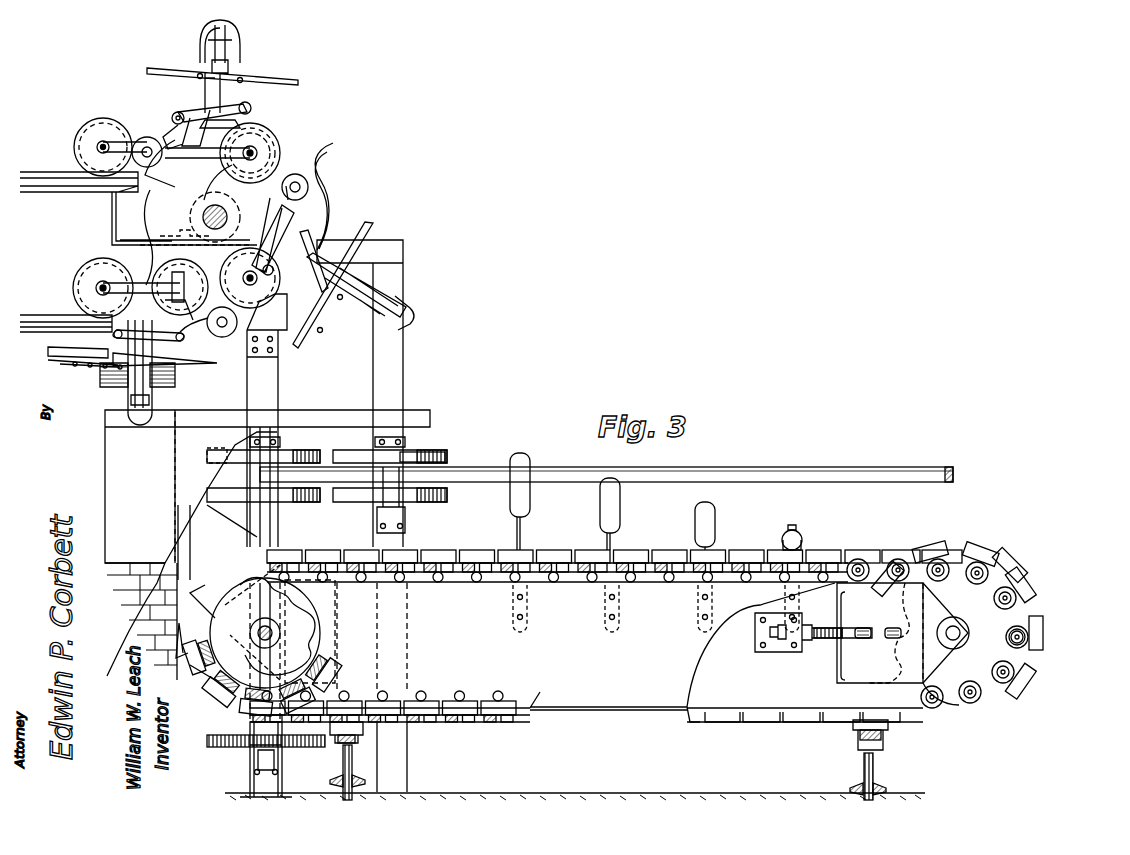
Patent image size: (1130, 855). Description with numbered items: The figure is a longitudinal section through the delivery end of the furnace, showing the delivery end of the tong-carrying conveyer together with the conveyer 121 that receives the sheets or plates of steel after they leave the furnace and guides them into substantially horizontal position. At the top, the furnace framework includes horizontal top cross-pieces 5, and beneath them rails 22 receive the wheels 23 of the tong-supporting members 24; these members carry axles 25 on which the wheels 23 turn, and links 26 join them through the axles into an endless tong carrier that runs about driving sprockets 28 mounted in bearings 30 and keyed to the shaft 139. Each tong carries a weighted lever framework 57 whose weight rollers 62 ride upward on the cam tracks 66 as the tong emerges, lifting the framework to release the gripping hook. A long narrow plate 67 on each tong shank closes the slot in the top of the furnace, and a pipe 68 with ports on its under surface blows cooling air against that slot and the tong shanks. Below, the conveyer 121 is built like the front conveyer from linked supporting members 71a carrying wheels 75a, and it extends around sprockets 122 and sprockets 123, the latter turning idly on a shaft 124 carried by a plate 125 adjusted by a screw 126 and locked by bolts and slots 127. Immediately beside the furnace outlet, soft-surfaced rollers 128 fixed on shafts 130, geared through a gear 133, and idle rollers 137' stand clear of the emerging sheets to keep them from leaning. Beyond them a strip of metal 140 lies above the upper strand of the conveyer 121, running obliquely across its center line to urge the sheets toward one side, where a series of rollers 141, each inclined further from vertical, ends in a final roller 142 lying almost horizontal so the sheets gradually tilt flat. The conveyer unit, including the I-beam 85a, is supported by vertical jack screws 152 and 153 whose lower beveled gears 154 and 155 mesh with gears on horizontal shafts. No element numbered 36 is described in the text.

The top cross-pieces 5 is at (110, 221).
The rails 22 is at (68, 320).
The wheels 23 is at (110, 130).
The tong-supporting members 24 is at (251, 146).
The axles 25 is at (262, 148).
The links 26 is at (280, 152).
The driving sprockets 28 is at (306, 190).
The bearings 30 is at (187, 223).
The table 36 is at (72, 182).
The weighted lever framework 57 is at (197, 114).
The weight rollers 62 is at (223, 340).
The cam tracks 66 is at (314, 166).
The plate 67 is at (266, 78).
The pipe 68 is at (74, 358).
The supporting members 71a is at (921, 554).
The wheels 75a is at (1027, 640).
The I-beam 85a is at (735, 690).
The conveyer 121 is at (1031, 602).
The sprockets 122 is at (230, 637).
The sprockets 123 is at (972, 604).
The shaft 124 is at (960, 636).
The plate 125 is at (866, 600).
The screw 126 is at (820, 655).
The bolts and slots 127 is at (893, 642).
The rollers 128 is at (296, 448).
The shafts 130 is at (266, 526).
The gear 133 is at (232, 748).
The rollers 137' is at (446, 446).
The shaft 139 is at (402, 511).
The strip of metal 140 is at (769, 478).
The rollers 141 is at (621, 508).
The final roller 142 is at (798, 533).
The vertical jack screw 152 is at (353, 760).
The vertical jack screw 153 is at (856, 748).
The beveled gear 154 is at (338, 782).
The beveled gear 155 is at (860, 782).